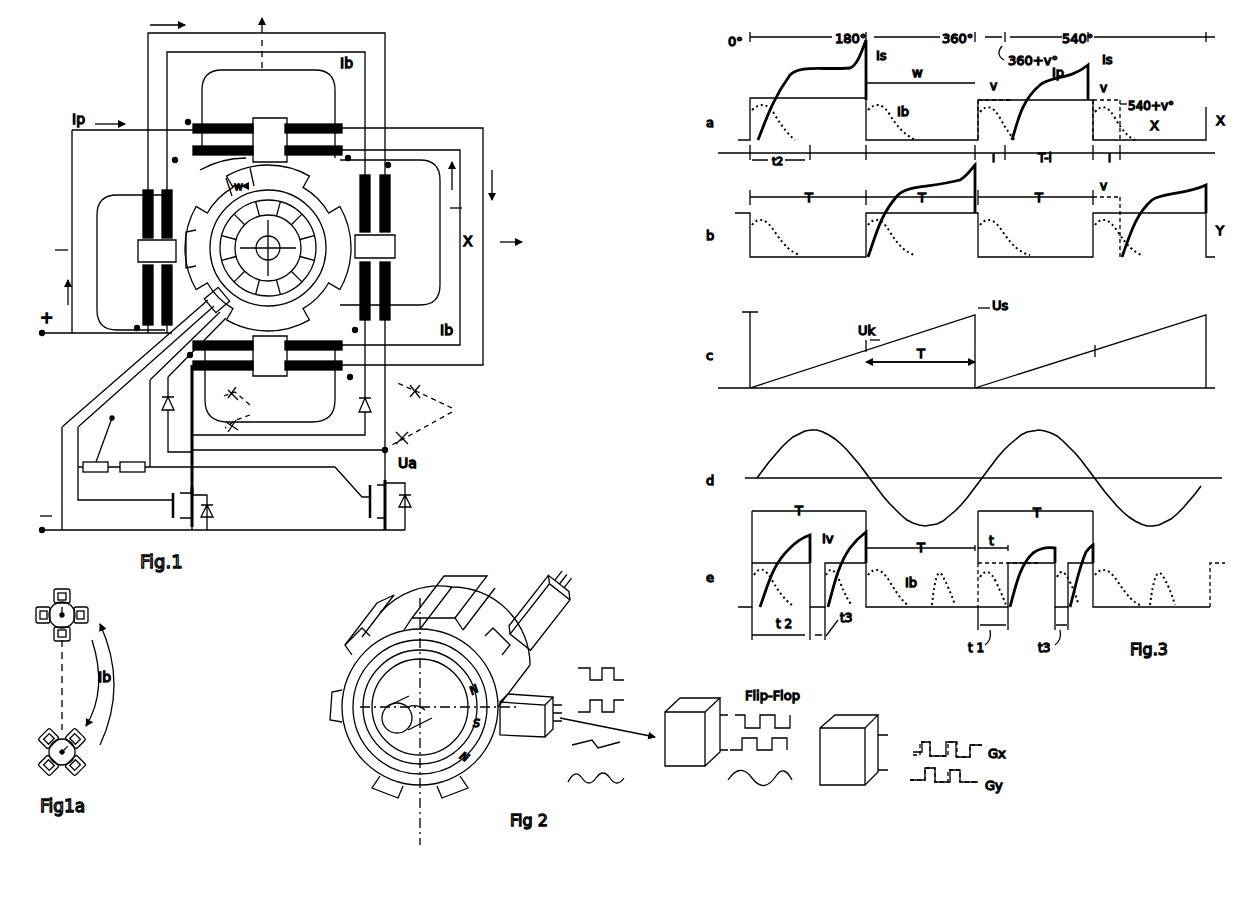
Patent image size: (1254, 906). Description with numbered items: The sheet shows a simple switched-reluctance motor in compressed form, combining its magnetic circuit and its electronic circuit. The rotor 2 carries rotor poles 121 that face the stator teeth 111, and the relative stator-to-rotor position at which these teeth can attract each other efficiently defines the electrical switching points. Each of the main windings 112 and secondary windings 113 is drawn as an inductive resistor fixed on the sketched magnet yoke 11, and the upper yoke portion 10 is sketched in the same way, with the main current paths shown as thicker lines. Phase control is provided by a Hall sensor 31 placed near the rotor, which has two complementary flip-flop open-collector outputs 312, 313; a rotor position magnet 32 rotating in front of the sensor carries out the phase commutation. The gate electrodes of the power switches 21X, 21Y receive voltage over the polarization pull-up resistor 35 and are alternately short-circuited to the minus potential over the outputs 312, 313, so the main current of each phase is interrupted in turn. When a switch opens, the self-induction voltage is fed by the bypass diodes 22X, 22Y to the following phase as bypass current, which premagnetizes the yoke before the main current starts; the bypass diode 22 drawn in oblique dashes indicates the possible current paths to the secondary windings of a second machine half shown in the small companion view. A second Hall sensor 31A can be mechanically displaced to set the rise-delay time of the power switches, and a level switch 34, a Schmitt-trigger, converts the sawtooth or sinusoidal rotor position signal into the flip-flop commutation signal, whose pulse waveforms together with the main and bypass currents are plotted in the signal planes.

In FIG. 1, the rotor 2 is at (268, 248).
In FIG. 2, the rotor 2 is at (430, 687).
In FIG. 1, the yoke 10 is at (268, 114).
In FIG. 1, the magnet yoke 11 is at (118, 192).
In FIG. 1, the stator teeth 111 is at (197, 188).
In FIG. 1, the main windings 112 is at (145, 178).
In FIG. 1, the secondary windings 113 is at (340, 148).
In FIG. 1, the rotor poles 121 is at (201, 249).
In FIG. 1, the power switch of phase X 21X is at (167, 506).
In FIG. 1, the power switch of phase Y 21Y is at (369, 505).
In FIG. 1, the bypass diodes 22 is at (355, 414).
In FIG. 1, the bypass diode of phase X 22X is at (350, 415).
In FIG. 1, the bypass diode of phase Y 22Y is at (175, 404).
In FIG. 1, the Hall sensor 31 is at (232, 306).
In FIG. 2, the Hall sensor 31 is at (535, 705).
In FIG. 2, the second Hall sensor 31A is at (551, 635).
In FIG. 1, the Hall sensor output 312 is at (224, 479).
In FIG. 1, the Hall sensor output 313 is at (165, 414).
In FIG. 1, the rotor position magnet 32 is at (318, 248).
In FIG. 2, the rotor position magnet 32 is at (420, 707).
In FIG. 2, the level switch 34 is at (692, 732).
In FIG. 1, the polarization pull-up resistor 35 is at (104, 456).